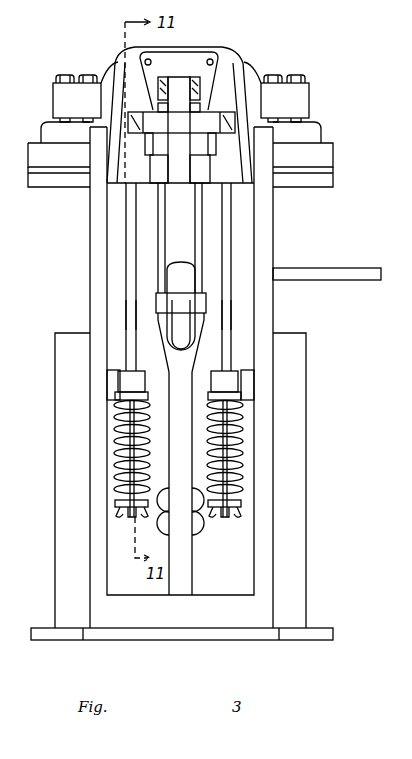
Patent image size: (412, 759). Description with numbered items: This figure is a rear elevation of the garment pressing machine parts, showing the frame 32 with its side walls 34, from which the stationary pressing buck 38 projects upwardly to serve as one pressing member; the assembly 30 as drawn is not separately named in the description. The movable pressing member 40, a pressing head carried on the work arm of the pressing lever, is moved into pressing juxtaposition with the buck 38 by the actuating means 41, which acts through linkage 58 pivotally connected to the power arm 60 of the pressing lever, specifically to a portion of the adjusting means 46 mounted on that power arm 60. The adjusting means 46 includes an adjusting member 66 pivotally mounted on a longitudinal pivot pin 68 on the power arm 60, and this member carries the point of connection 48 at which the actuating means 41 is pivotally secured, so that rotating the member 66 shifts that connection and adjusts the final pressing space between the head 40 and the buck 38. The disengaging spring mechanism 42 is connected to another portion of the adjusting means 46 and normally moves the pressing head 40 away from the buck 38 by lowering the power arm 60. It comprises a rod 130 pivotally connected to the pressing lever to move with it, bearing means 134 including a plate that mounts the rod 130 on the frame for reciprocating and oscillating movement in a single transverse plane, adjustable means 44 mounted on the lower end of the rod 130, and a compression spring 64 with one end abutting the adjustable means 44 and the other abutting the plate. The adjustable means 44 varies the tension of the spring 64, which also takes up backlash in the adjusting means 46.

The frame 30 is at (313, 390).
The frame 32 is at (309, 470).
The side walls 34 is at (95, 265).
The stationary pressing buck 38 is at (324, 178).
The movable pressing member 40 is at (323, 157).
The actuating means 41 is at (192, 555).
The disengaging spring mechanism 42 is at (133, 327).
The adjustable means 44 is at (115, 515).
The adjusting means 46 is at (183, 80).
The point of connection 48 is at (147, 167).
The linkage 58 is at (163, 307).
The power arm 60 is at (228, 58).
The compression spring 64 is at (120, 442).
The adjusting member 66 is at (182, 150).
The longitudinal pivot pin 68 is at (200, 162).
The rod 130 is at (133, 228).
The bearing means 134 is at (128, 382).